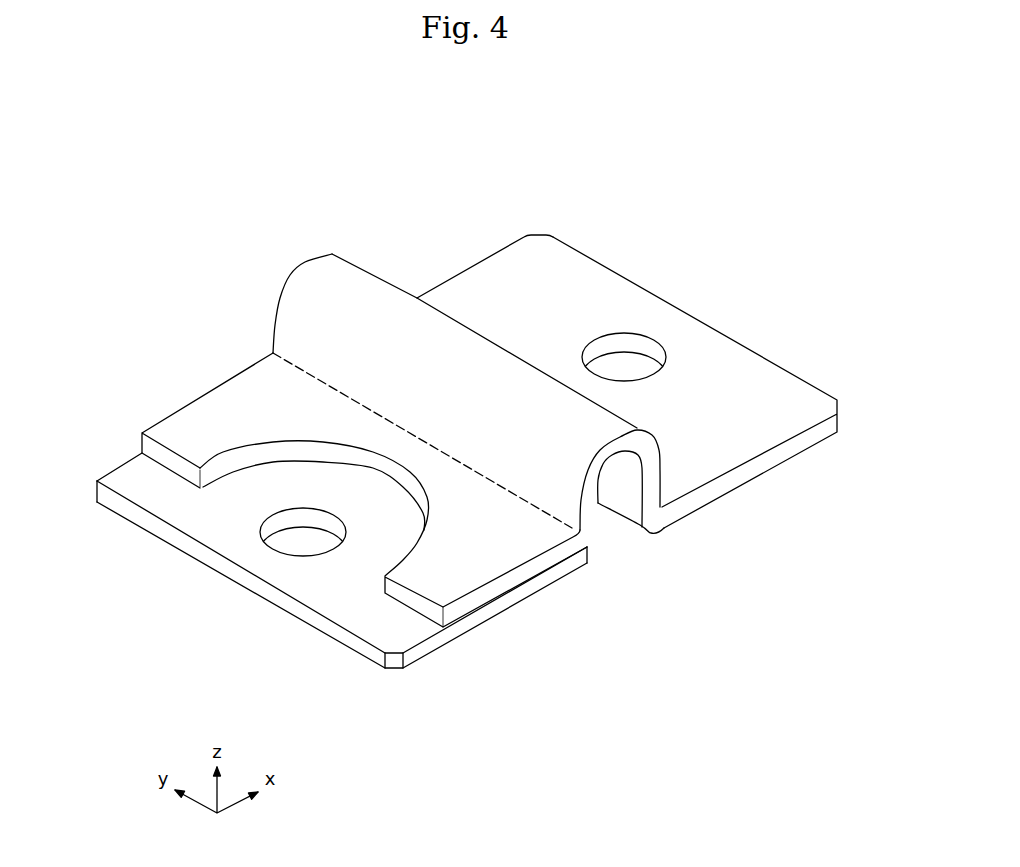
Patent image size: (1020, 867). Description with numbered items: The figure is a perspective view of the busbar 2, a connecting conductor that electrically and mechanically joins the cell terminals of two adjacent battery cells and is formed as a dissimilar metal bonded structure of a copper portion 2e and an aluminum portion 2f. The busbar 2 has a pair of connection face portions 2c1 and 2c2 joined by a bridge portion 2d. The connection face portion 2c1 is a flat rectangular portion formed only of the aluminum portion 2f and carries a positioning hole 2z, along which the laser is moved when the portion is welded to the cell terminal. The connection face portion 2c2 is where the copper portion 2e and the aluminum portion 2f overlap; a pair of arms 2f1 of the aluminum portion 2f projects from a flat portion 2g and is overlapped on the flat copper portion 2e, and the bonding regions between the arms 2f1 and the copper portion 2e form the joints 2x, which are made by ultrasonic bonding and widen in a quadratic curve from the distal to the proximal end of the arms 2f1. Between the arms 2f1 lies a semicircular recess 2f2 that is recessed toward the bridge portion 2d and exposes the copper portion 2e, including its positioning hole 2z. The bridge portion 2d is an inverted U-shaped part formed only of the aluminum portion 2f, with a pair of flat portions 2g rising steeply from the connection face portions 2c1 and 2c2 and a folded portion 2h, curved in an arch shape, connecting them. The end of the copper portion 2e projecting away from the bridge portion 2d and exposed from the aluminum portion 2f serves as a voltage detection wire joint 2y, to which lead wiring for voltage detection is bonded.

The busbar 2 is at (267, 149).
The connection face portion 2c1 is at (743, 384).
The connection face portion 2c2 is at (343, 568).
The bridge portion 2d is at (285, 280).
The copper portion 2e is at (115, 462).
The aluminum portion 2f is at (492, 255).
The arms 2f1 is at (205, 425).
The recess 2f2 is at (378, 468).
The flat portion 2g is at (588, 510).
The folded portion 2h is at (382, 278).
The joint 2x is at (240, 477).
The voltage detection wire joint 2y is at (198, 508).
The positioning hole 2z is at (300, 517).